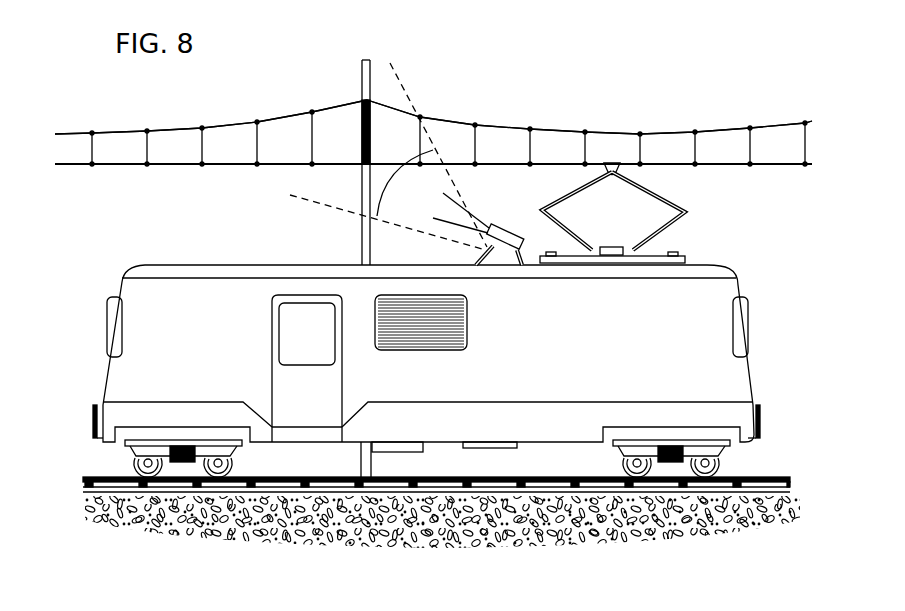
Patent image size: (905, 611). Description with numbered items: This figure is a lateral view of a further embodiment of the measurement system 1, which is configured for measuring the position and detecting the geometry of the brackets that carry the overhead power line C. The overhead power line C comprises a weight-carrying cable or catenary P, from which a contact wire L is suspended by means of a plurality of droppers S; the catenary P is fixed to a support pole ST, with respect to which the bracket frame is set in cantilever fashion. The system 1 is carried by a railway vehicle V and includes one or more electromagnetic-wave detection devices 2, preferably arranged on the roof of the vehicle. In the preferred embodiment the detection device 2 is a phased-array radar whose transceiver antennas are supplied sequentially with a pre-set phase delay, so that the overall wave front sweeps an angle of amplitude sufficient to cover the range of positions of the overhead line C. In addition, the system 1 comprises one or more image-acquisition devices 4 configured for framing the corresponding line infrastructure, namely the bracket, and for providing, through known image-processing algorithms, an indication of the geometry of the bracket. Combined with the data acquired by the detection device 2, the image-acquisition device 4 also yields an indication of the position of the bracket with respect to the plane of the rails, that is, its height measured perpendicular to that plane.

The system 1 is at (515, 219).
The detection device 2 is at (496, 256).
The image-acquisition device 4 is at (520, 256).
The rail vehicle V is at (112, 275).
The overhead power line C is at (331, 106).
The weight-carrying cable or catenary P is at (183, 131).
The droppers S is at (259, 143).
The contact wire L is at (178, 165).
The support pole ST is at (364, 58).